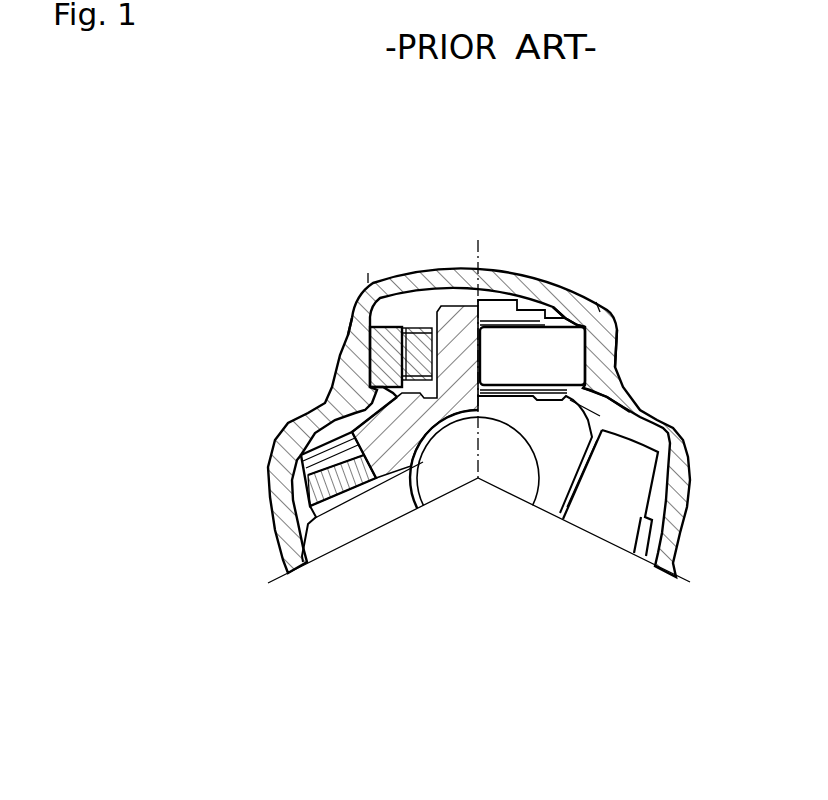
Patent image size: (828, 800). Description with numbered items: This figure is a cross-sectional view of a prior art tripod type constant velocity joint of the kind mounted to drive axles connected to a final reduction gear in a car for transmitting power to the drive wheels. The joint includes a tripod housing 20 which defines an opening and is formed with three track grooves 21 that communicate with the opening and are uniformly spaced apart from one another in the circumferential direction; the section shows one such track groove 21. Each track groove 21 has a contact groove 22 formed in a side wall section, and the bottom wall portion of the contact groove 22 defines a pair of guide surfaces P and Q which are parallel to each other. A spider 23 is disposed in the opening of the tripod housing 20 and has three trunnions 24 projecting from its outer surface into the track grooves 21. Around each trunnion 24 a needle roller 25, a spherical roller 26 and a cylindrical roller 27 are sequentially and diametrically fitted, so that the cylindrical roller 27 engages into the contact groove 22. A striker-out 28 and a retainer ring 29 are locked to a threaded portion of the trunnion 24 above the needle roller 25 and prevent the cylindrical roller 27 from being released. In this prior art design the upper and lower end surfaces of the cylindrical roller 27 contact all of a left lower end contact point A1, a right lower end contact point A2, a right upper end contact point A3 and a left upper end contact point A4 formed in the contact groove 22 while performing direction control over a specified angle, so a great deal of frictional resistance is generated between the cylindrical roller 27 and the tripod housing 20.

The tripod housing 20 is at (634, 412).
The track groove 21 is at (509, 283).
The contact groove 22 is at (297, 460).
The spider 23 is at (333, 383).
The trunnion 24 is at (462, 305).
The needle roller 25 is at (430, 335).
The spherical roller 26 is at (390, 335).
The cylindrical roller 27 is at (342, 347).
The striker-out 28 is at (566, 300).
The retainer ring 29 is at (538, 288).
The left lower end contact point A1 is at (387, 415).
The right lower end contact point A2 is at (590, 388).
The right upper end contact point A3 is at (590, 320).
The left upper end contact point A4 is at (382, 290).
The guide surface P is at (601, 286).
The guide surface Q is at (355, 268).